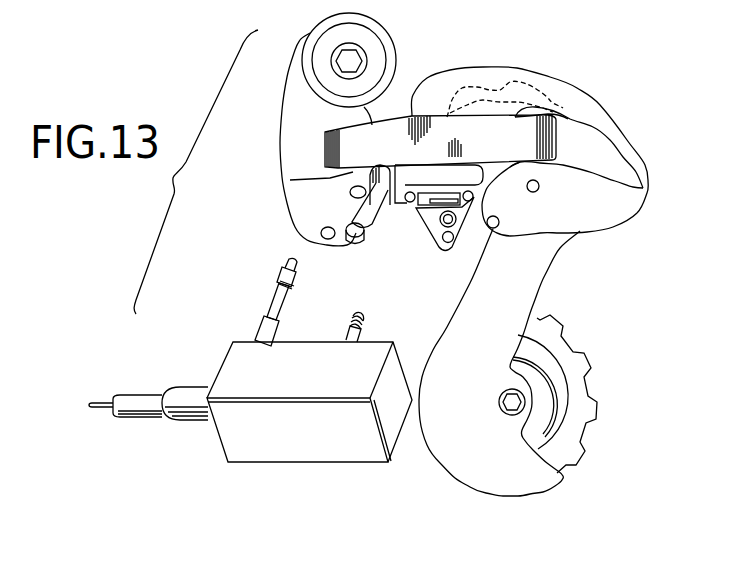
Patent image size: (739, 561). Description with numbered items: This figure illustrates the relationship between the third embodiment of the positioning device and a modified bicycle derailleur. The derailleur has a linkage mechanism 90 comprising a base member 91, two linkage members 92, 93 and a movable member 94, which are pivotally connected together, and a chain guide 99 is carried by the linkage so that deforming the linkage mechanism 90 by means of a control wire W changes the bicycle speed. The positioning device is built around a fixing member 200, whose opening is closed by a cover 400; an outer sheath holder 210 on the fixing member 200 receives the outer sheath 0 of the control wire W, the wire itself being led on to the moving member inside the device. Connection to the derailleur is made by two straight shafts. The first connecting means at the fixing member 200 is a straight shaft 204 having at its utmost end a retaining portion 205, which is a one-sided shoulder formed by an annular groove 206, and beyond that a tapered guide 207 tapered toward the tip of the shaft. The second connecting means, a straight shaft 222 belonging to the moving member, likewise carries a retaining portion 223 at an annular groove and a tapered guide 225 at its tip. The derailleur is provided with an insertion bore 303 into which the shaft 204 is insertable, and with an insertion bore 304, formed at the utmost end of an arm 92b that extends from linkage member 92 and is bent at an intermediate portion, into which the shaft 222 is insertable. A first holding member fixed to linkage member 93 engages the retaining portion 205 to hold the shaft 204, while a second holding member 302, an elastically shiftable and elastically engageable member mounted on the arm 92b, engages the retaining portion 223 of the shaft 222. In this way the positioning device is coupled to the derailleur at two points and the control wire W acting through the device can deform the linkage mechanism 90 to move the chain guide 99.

The linkage mechanism 90 is at (568, 110).
The base member 91 is at (287, 119).
The linkage member 92 is at (488, 113).
The arm 92b is at (450, 250).
The linkage member 93 is at (381, 228).
The movable member 94 is at (640, 172).
The chain guide 99 is at (540, 288).
The second holding member 302 is at (443, 200).
The insertion bore 303 is at (354, 238).
The insertion bore 304 is at (443, 223).
The fixing member 200 is at (262, 390).
The cover 400 is at (300, 458).
The straight shaft 204 is at (262, 318).
The retaining portion 205 is at (282, 272).
The annular groove 206 is at (270, 297).
The tapered guide 207 is at (290, 261).
The outer sheath holder 210 is at (183, 427).
The outer sheath 0 is at (142, 417).
The control wire W is at (105, 413).
The straight shaft 222 is at (348, 333).
The retaining portion 223 is at (352, 320).
The tapered guide 225 is at (363, 323).